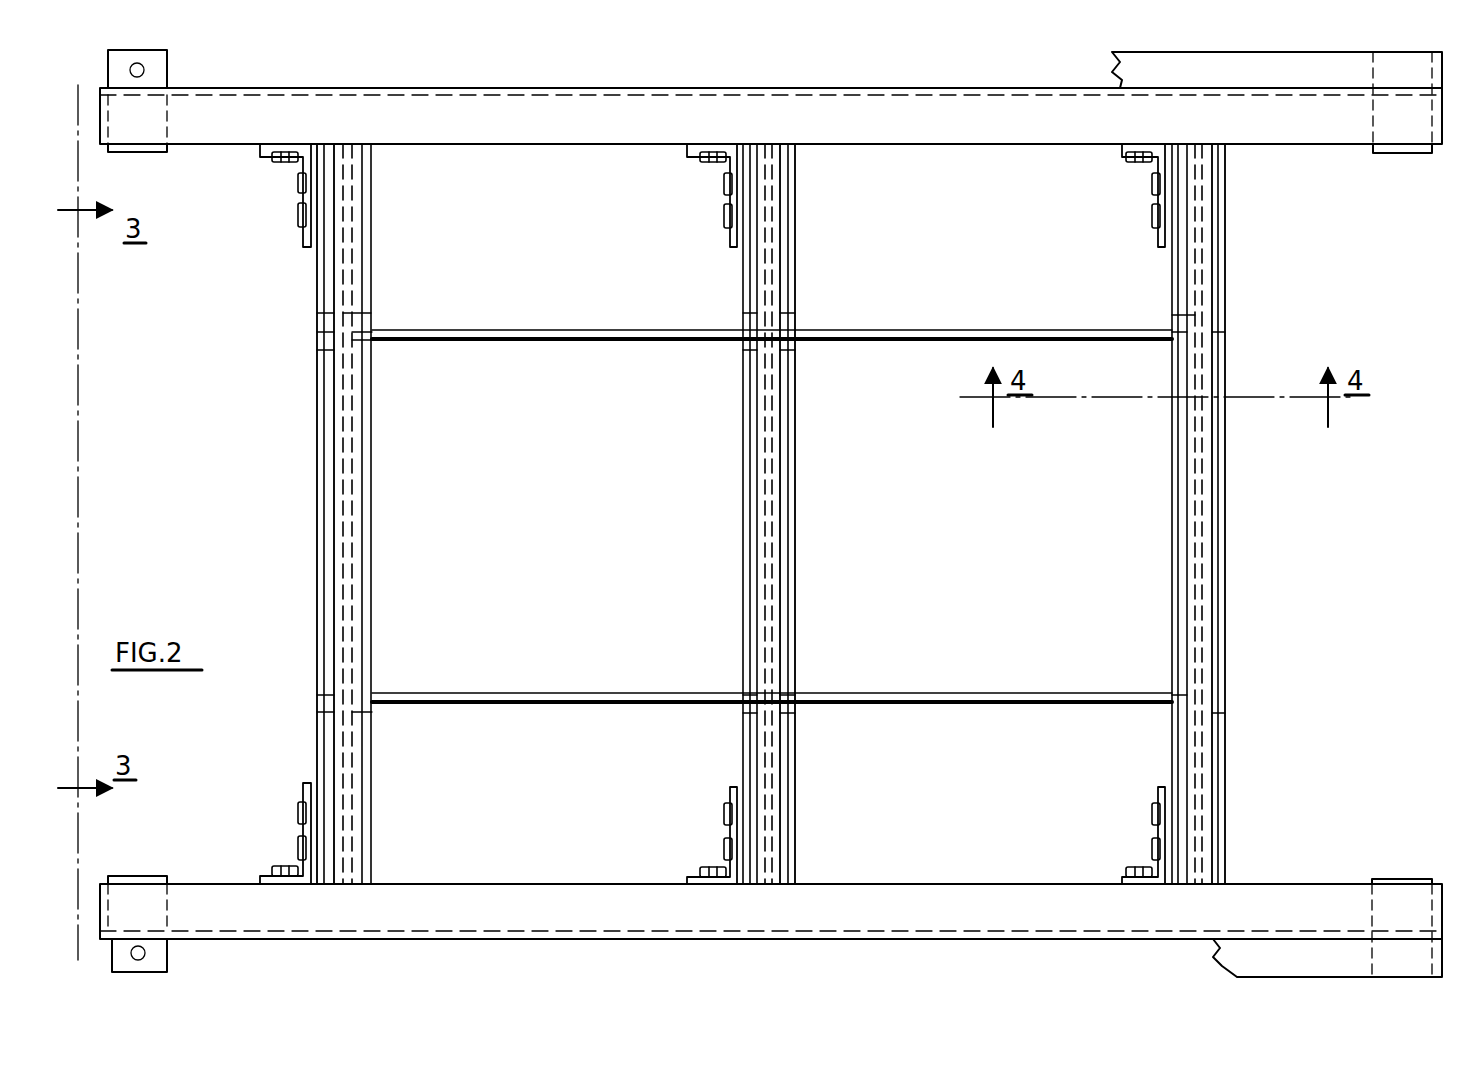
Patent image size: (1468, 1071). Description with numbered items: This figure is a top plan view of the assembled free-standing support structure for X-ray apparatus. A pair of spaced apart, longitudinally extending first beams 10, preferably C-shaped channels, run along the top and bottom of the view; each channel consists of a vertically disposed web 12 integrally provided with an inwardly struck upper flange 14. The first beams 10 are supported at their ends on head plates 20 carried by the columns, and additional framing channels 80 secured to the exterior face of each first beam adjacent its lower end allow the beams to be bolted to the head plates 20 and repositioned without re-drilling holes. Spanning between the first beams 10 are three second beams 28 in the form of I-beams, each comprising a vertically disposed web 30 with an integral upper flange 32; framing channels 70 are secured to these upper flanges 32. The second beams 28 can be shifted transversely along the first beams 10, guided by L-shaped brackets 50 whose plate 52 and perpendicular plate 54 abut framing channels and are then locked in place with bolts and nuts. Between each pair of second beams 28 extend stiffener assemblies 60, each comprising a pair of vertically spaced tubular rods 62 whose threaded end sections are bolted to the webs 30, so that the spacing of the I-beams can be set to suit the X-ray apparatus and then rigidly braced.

The first beam 10 is at (500, 80).
The web 12 is at (635, 88).
The upper flange 14 is at (990, 118).
The head plate 20 is at (140, 152).
The second beam 28 is at (316, 513).
The web 30 is at (345, 548).
The upper flange 32 is at (318, 418).
The L-shaped bracket 50 is at (262, 164).
The plate 52 is at (275, 148).
The perpendicular plate 54 is at (312, 243).
The stiffener assembly 60 is at (513, 348).
The tubular rod 62 is at (555, 328).
The framing channel 70 is at (357, 382).
The framing channel 80 is at (1140, 50).